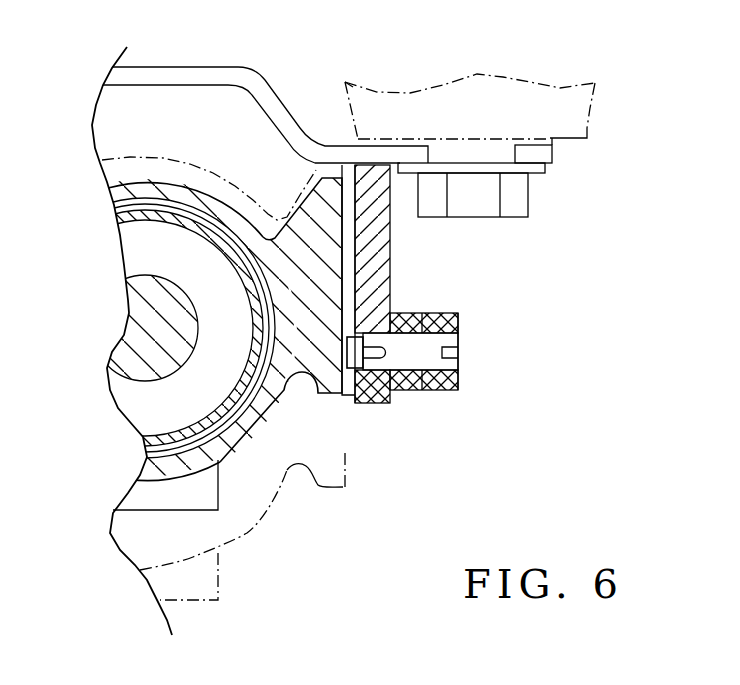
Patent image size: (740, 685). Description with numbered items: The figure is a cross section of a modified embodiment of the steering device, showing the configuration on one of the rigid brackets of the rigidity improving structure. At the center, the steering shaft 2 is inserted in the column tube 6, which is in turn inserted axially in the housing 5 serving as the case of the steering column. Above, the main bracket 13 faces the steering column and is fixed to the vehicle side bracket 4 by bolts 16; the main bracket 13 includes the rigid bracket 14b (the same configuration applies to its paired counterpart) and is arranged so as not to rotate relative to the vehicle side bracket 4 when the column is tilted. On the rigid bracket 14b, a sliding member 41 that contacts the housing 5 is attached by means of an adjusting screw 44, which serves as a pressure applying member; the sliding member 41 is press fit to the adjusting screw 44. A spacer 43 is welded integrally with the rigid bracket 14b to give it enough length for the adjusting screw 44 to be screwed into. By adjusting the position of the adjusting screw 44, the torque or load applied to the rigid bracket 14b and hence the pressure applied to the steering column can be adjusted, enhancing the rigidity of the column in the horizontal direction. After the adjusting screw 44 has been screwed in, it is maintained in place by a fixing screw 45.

The steering shaft 2 is at (159, 367).
The vehicle side bracket 4 is at (583, 108).
The housing 5 is at (243, 432).
The column tube 6 is at (223, 417).
The main bracket 13 is at (178, 70).
The rigid bracket 14b is at (380, 272).
The bolt 16 is at (477, 217).
The sliding member 41 is at (358, 357).
The spacer 43 is at (410, 387).
The adjusting screw 44 is at (457, 382).
The fixing screw 45 is at (457, 313).